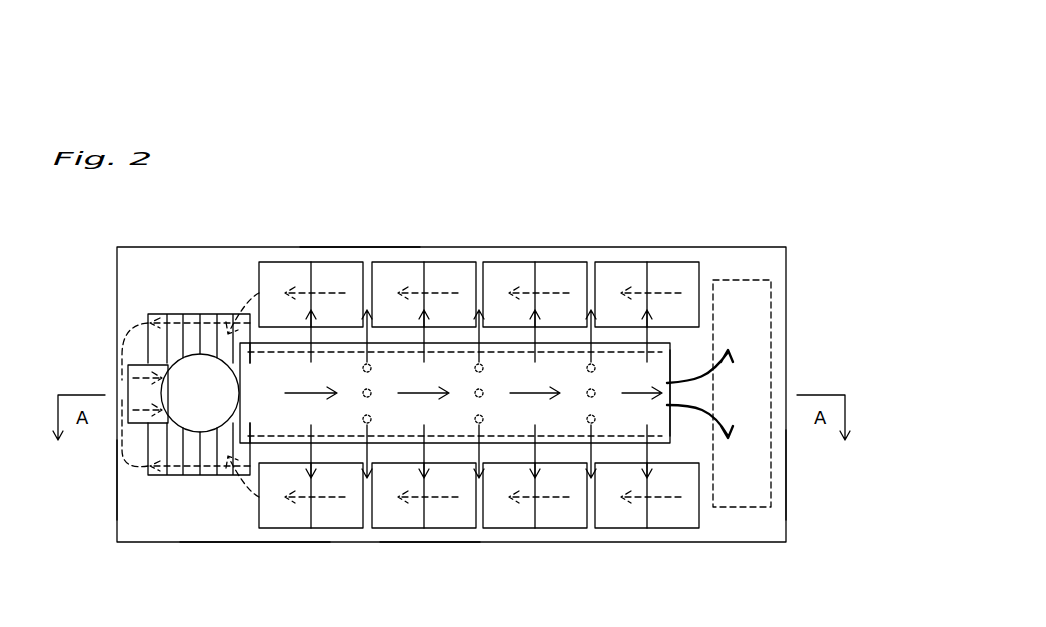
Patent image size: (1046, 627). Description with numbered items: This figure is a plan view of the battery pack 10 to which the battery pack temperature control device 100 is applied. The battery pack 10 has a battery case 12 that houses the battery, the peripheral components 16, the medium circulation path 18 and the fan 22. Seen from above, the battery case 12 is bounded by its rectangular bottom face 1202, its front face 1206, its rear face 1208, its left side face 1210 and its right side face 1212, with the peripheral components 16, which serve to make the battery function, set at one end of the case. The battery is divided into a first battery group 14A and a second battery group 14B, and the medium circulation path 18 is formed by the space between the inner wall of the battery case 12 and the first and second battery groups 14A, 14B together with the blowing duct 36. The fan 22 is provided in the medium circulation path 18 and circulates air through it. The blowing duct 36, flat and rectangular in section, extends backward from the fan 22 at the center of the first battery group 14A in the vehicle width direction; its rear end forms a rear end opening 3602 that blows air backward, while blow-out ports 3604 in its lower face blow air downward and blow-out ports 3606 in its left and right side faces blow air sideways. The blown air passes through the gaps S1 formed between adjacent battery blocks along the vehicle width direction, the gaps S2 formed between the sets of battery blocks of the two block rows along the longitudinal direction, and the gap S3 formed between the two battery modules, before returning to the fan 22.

The battery pack 10 is at (451, 390).
The battery pack temperature control device 100 is at (478, 222).
The battery case 12 is at (535, 247).
The bottom face 1202 is at (222, 517).
The front face 1206 is at (117, 480).
The rear face 1208 is at (787, 472).
The left side face 1210 is at (423, 545).
The right side face 1212 is at (343, 247).
The first battery group 14A is at (551, 541).
The second battery group 14B is at (187, 489).
The peripheral components 16 is at (760, 281).
The medium circulation path 18 is at (479, 415).
The fan 22 is at (193, 353).
The blowing duct 36 is at (455, 343).
The rear end opening 3602 is at (668, 358).
The blow-out ports 3604 is at (595, 391).
The blow-out ports 3606 is at (594, 365).
The gap S1 is at (367, 530).
The gap S2 is at (715, 393).
The gap S3 is at (246, 392).